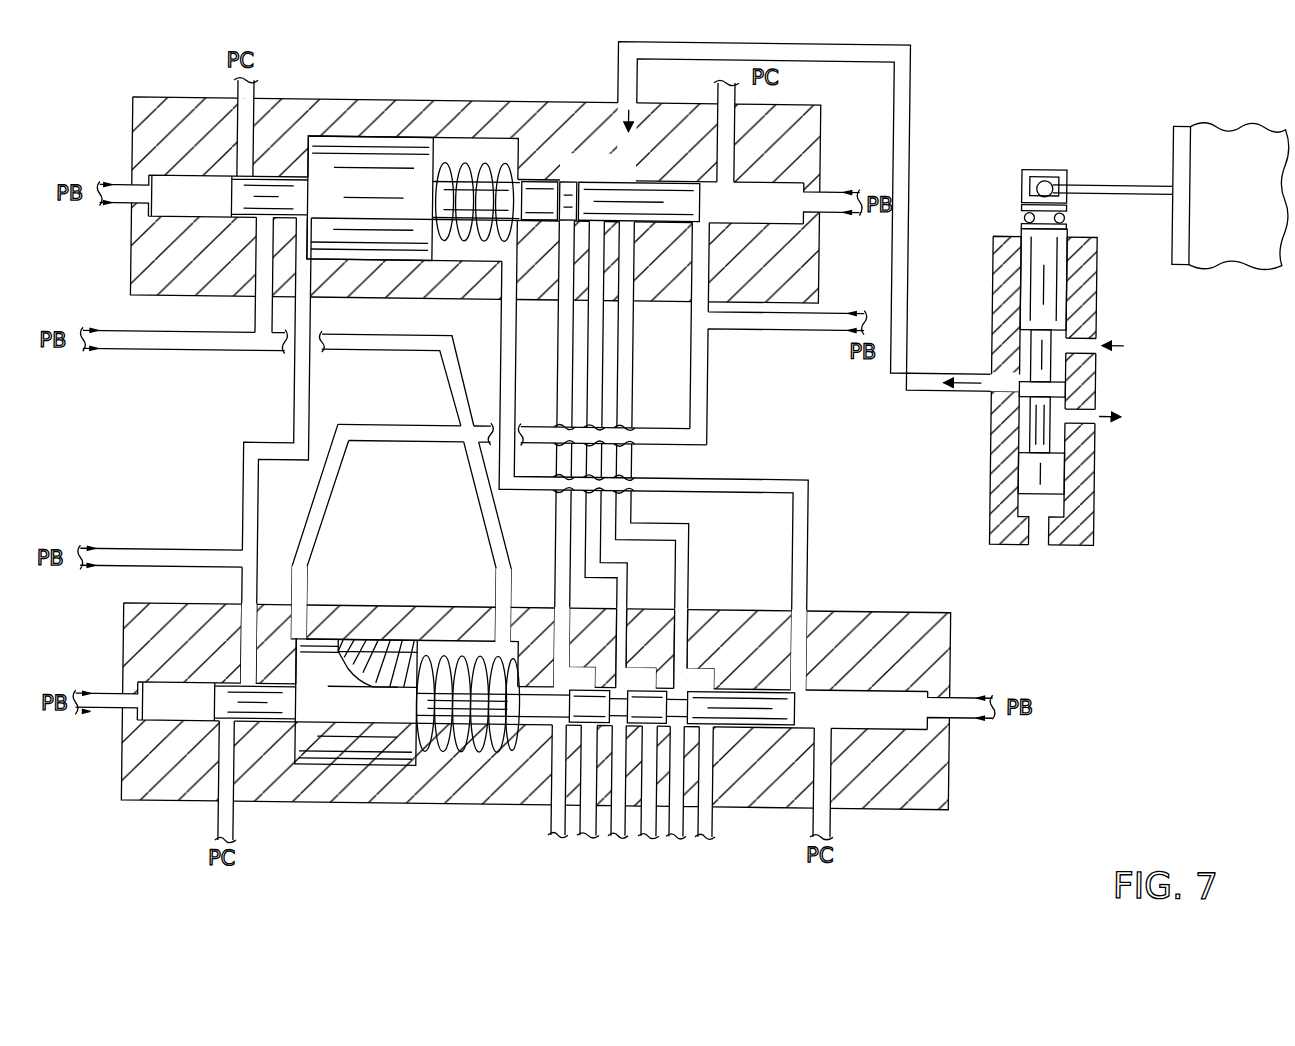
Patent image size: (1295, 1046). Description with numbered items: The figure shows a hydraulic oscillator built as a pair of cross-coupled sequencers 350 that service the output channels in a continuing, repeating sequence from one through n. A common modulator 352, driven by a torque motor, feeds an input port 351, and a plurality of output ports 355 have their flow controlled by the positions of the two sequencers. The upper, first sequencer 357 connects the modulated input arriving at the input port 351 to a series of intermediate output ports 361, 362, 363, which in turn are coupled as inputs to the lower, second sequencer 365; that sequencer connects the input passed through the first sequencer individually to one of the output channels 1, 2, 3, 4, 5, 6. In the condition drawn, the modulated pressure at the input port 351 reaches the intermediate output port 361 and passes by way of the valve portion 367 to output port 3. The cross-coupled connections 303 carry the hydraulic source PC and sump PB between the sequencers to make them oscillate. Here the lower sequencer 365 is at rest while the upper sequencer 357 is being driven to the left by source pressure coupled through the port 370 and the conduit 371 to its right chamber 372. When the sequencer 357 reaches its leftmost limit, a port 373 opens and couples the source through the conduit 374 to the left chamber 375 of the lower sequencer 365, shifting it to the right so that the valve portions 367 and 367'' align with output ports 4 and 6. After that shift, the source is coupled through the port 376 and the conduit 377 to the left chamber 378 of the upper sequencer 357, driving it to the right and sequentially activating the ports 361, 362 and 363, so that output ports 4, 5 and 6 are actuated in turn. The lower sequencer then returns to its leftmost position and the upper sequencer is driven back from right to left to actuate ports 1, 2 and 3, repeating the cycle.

The cross-coupled connections 303 is at (160, 453).
The pair of cross-coupled sequencers 350 is at (815, 386).
The input port 351 is at (627, 145).
The common modulator 352 is at (1226, 314).
The output ports 355 is at (630, 815).
The first sequencer 357 is at (812, 137).
The intermediate output port 361 is at (563, 304).
The intermediate output port 362 is at (590, 313).
The intermediate output port 363 is at (623, 310).
The second sequencer 365 is at (905, 612).
The valve portion 367 is at (572, 705).
The valve portion 367'' is at (714, 614).
The port 370 is at (793, 677).
The conduit 371 is at (767, 478).
The right chamber 372 is at (480, 143).
The port 373 is at (702, 222).
The conduit 374 is at (413, 433).
The left chamber 375 is at (298, 615).
The port 376 is at (247, 671).
The conduit 377 is at (310, 394).
The left chamber 378 is at (298, 162).
The output port 1 is at (677, 795).
The output port 2 is at (619, 795).
The output port 3 is at (559, 794).
The output port 4 is at (589, 794).
The output port 5 is at (649, 795).
The output port 6 is at (706, 796).